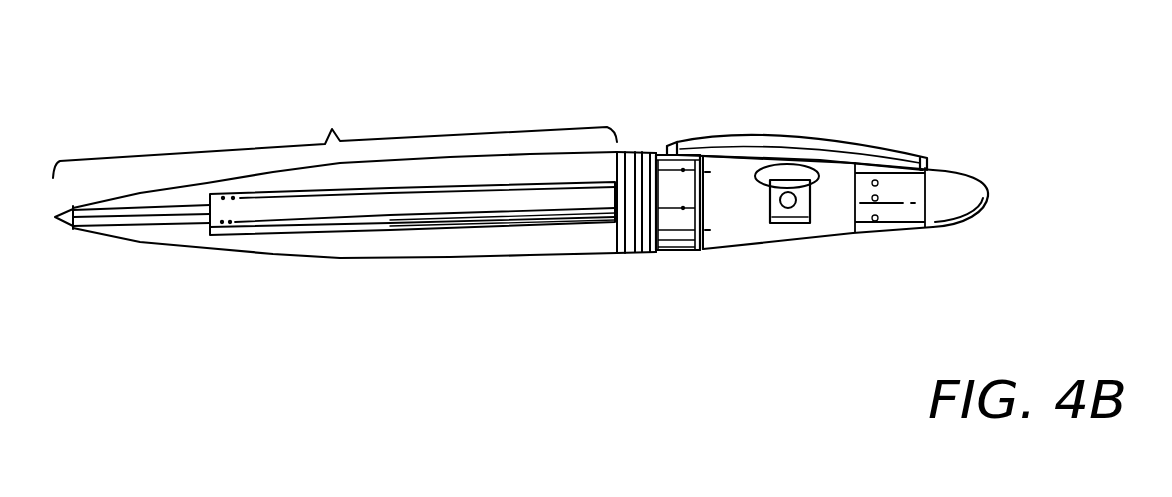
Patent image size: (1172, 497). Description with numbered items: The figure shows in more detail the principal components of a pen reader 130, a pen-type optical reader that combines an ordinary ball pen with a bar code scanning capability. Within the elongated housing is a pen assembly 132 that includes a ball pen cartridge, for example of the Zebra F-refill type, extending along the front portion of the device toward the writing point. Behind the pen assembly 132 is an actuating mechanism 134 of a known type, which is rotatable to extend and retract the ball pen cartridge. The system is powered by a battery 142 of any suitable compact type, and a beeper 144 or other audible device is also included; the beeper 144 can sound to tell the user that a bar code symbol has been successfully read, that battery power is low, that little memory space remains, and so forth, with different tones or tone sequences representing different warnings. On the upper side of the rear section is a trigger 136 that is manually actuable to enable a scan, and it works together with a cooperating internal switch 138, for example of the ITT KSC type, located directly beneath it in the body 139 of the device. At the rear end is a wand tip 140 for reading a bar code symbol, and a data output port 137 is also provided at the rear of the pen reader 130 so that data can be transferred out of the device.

The pen reader 130 is at (192, 98).
The pen assembly 132 is at (335, 166).
The actuating mechanism 134 is at (638, 253).
The trigger 136 is at (788, 178).
The data output port 137 is at (965, 194).
The internal switch 138 is at (787, 223).
The rear housing 139 is at (847, 232).
The wand tip 140 is at (915, 202).
The battery 142 is at (626, 235).
The beeper 144 is at (697, 252).